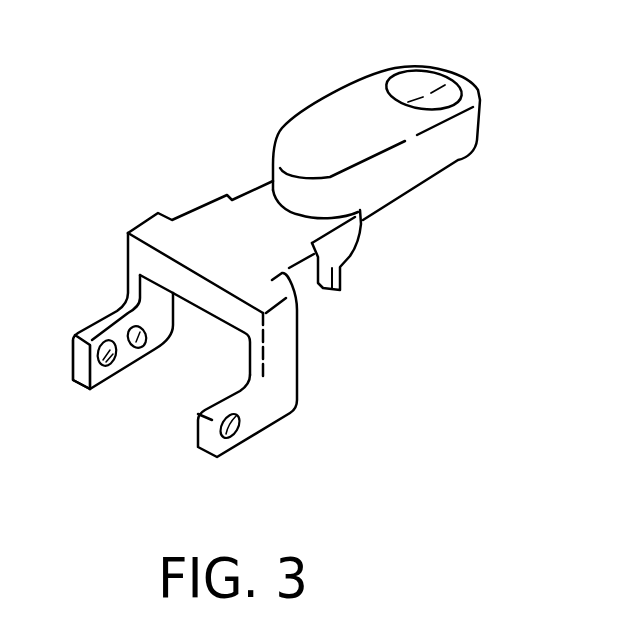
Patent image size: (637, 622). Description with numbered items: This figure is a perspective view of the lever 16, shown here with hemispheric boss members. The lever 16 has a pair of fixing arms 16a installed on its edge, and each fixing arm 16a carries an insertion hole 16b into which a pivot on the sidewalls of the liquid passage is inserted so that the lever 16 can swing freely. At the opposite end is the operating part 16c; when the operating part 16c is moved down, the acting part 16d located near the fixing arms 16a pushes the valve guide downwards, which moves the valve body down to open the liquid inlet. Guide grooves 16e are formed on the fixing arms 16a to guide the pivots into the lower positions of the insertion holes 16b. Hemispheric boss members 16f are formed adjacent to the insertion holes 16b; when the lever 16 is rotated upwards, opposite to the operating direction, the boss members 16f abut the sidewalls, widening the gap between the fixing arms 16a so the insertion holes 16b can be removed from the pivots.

The lever 16 is at (294, 27).
The fixing arms 16a is at (111, 320).
The insertion hole 16b is at (118, 368).
The operating part 16c is at (478, 91).
The acting part 16d is at (249, 213).
The guide grooves 16e is at (105, 380).
The boss members 16f is at (140, 348).